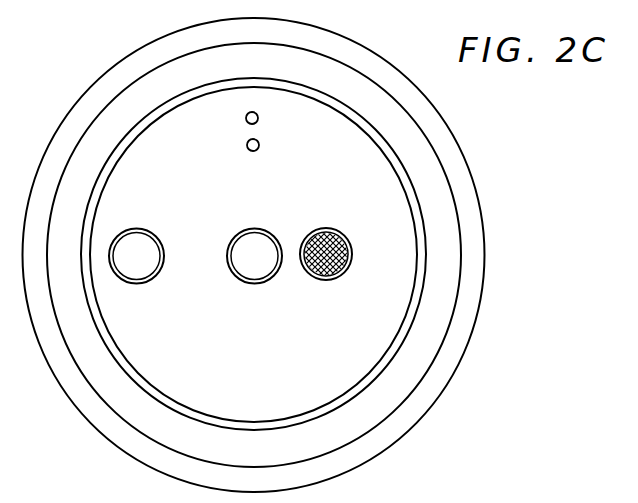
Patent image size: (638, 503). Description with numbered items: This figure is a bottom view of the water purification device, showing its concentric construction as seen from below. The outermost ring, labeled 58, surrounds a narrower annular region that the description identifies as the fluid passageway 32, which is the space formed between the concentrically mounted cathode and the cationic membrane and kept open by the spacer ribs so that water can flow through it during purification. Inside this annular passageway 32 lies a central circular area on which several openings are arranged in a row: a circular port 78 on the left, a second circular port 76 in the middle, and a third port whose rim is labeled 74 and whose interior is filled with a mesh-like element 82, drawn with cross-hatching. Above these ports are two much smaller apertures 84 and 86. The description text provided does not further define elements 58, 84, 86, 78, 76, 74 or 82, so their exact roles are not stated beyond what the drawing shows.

The outer housing wall 58 is at (452, 133).
The fluid passageway 32 is at (426, 190).
The small aperture 84 is at (258, 118).
The small aperture 86 is at (258, 149).
The circular port 78 is at (156, 283).
The circular port 76 is at (232, 275).
The circular port rim 74 is at (358, 265).
The screen mesh 82 is at (315, 280).